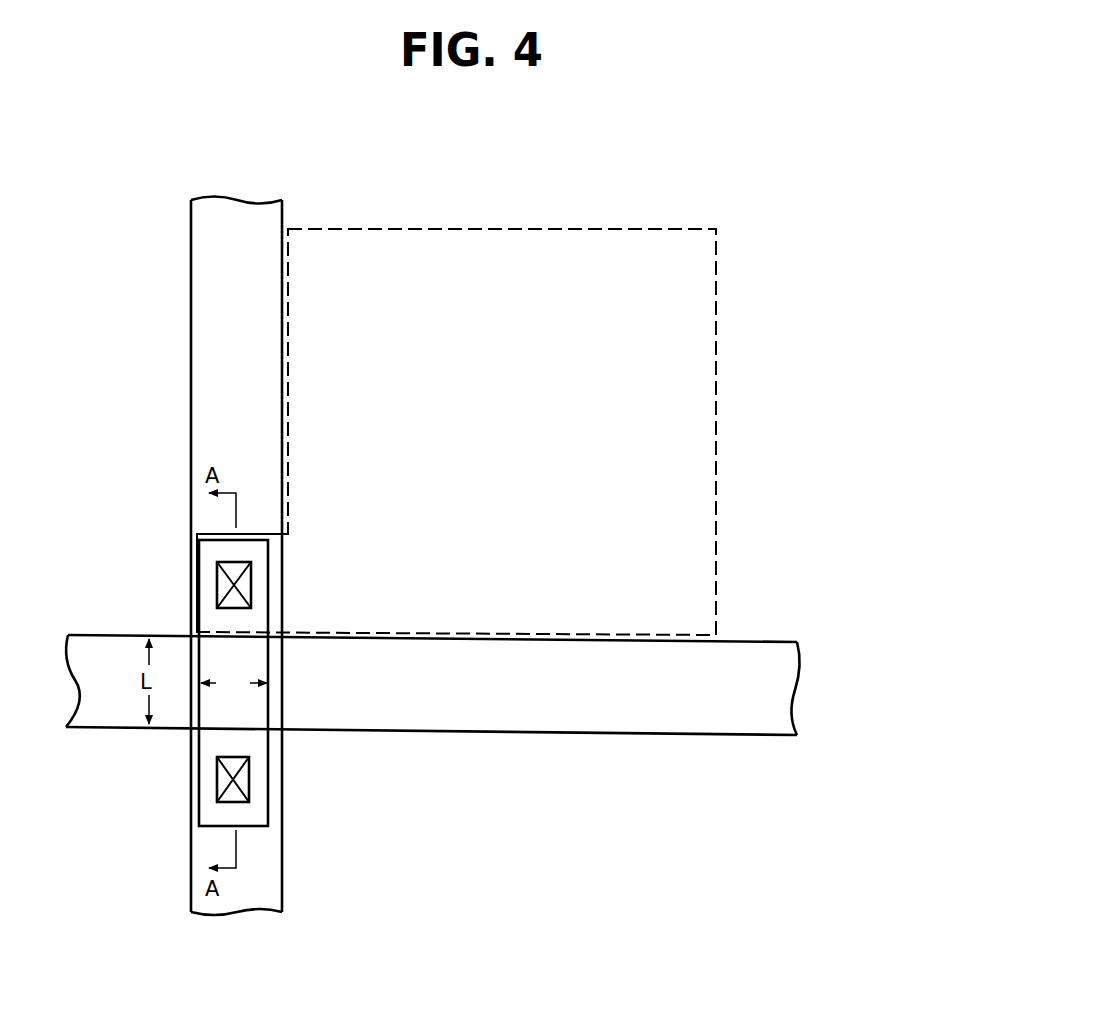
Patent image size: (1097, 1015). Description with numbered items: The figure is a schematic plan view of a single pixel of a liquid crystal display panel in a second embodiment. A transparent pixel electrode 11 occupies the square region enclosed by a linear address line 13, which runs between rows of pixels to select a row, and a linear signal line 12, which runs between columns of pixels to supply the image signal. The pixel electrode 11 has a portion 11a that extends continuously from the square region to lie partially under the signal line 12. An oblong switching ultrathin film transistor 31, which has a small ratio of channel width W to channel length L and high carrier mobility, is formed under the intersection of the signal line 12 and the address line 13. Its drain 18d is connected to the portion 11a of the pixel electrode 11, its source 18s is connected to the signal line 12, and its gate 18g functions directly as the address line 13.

The transparent pixel electrode 11 is at (581, 242).
The portion of the pixel electrode 11a is at (193, 532).
The signal line 12 is at (249, 216).
The address line 13 is at (593, 736).
The drain 18d is at (260, 593).
The source 18s is at (205, 783).
The gate 18g is at (260, 653).
The ultrathin film transistor 31 is at (250, 742).